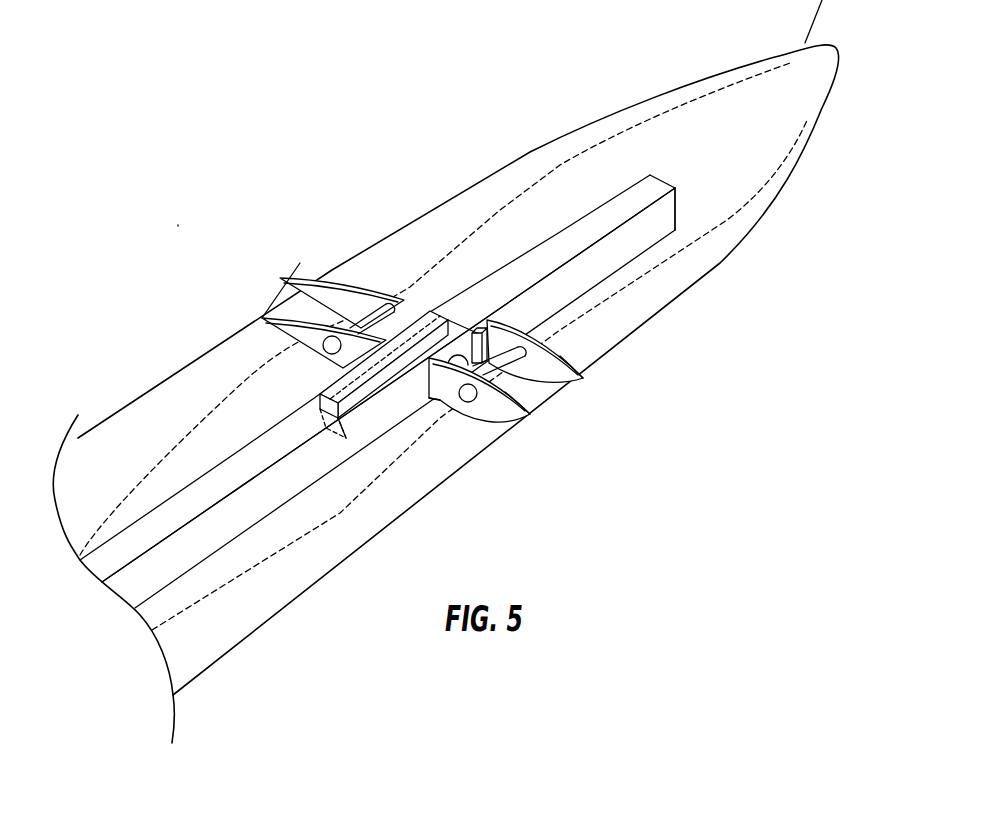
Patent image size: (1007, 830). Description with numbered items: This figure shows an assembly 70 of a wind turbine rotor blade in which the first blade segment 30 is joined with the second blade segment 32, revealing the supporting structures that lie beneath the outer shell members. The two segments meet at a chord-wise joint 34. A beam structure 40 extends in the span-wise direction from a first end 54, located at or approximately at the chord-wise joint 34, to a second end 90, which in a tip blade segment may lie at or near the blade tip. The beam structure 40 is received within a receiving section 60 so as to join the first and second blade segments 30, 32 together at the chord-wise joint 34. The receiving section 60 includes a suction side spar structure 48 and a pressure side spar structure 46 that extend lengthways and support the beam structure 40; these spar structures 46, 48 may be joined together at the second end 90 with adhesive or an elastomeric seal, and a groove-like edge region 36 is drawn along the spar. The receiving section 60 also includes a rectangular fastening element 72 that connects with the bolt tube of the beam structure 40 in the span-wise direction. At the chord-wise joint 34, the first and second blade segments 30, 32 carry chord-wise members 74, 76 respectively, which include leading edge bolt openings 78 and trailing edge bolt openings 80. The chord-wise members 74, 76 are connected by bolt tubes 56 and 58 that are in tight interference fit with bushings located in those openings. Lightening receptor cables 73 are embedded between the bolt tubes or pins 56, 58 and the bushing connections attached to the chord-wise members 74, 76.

The first blade segment 30 is at (583, 133).
The second blade segment 32 is at (117, 425).
The chord-wise joint 34 is at (300, 262).
The rail upper edge / groove 36 is at (543, 257).
The beam structure 40 is at (583, 228).
The pressure side spar structure 46 is at (658, 247).
The suction side spar structure 48 is at (640, 192).
The first end 54 is at (350, 442).
The bolt tube 56 is at (518, 344).
The bolt tube 58 is at (388, 298).
The receiving section 60 is at (412, 416).
The assembly 70 is at (178, 225).
The rectangular fastening element 72 is at (322, 410).
The lightening receptor cables 73 is at (670, 102).
The chord-wise member 74 is at (572, 354).
The chord-wise member 76 is at (486, 424).
The leading edge bolt openings 78 is at (524, 343).
The trailing edge bolt openings 80 is at (318, 346).
The second end 90 is at (683, 205).